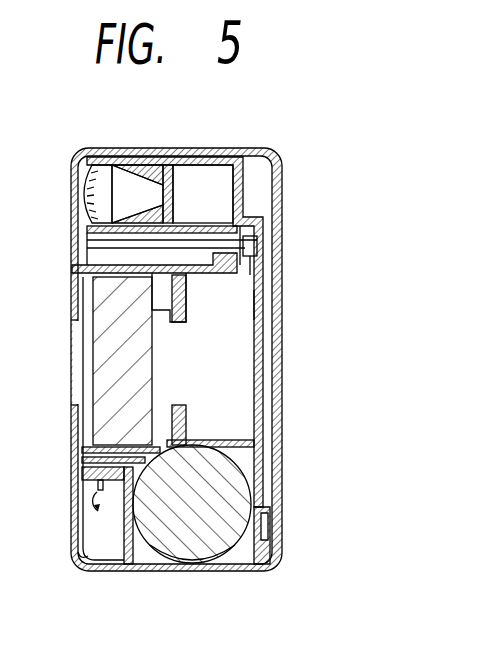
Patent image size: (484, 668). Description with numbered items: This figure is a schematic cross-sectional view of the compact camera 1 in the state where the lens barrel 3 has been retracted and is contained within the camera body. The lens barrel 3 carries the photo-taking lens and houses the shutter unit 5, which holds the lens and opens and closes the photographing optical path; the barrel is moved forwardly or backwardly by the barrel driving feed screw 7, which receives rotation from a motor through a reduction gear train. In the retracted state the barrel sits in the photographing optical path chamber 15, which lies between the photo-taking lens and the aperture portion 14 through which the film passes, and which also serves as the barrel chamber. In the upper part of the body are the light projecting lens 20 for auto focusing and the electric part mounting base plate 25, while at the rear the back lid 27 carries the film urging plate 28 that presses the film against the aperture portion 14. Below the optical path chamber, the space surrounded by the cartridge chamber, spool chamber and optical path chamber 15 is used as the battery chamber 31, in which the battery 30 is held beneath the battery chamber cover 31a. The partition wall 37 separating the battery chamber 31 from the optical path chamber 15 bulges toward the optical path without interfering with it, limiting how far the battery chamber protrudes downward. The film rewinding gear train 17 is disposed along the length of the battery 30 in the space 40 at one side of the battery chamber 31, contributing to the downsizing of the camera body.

The camera 1 is at (277, 139).
The lens barrel 3 is at (78, 296).
The shutter unit 5 is at (103, 360).
The barrel driving feed screw 7 is at (127, 248).
The aperture portion 14 is at (245, 365).
The photographing optical path chamber 15 is at (238, 303).
The film rewinding gear train 17 is at (86, 512).
The light projecting lens 20 is at (103, 167).
The electric part mounting base plate 25 is at (173, 163).
The back lid 27 is at (276, 450).
The film urging plate 28 is at (260, 338).
The battery 30 is at (216, 543).
The battery chamber 31 is at (140, 553).
The battery chamber cover 31a is at (227, 543).
The partition wall 37 is at (216, 440).
The space 40 is at (106, 543).